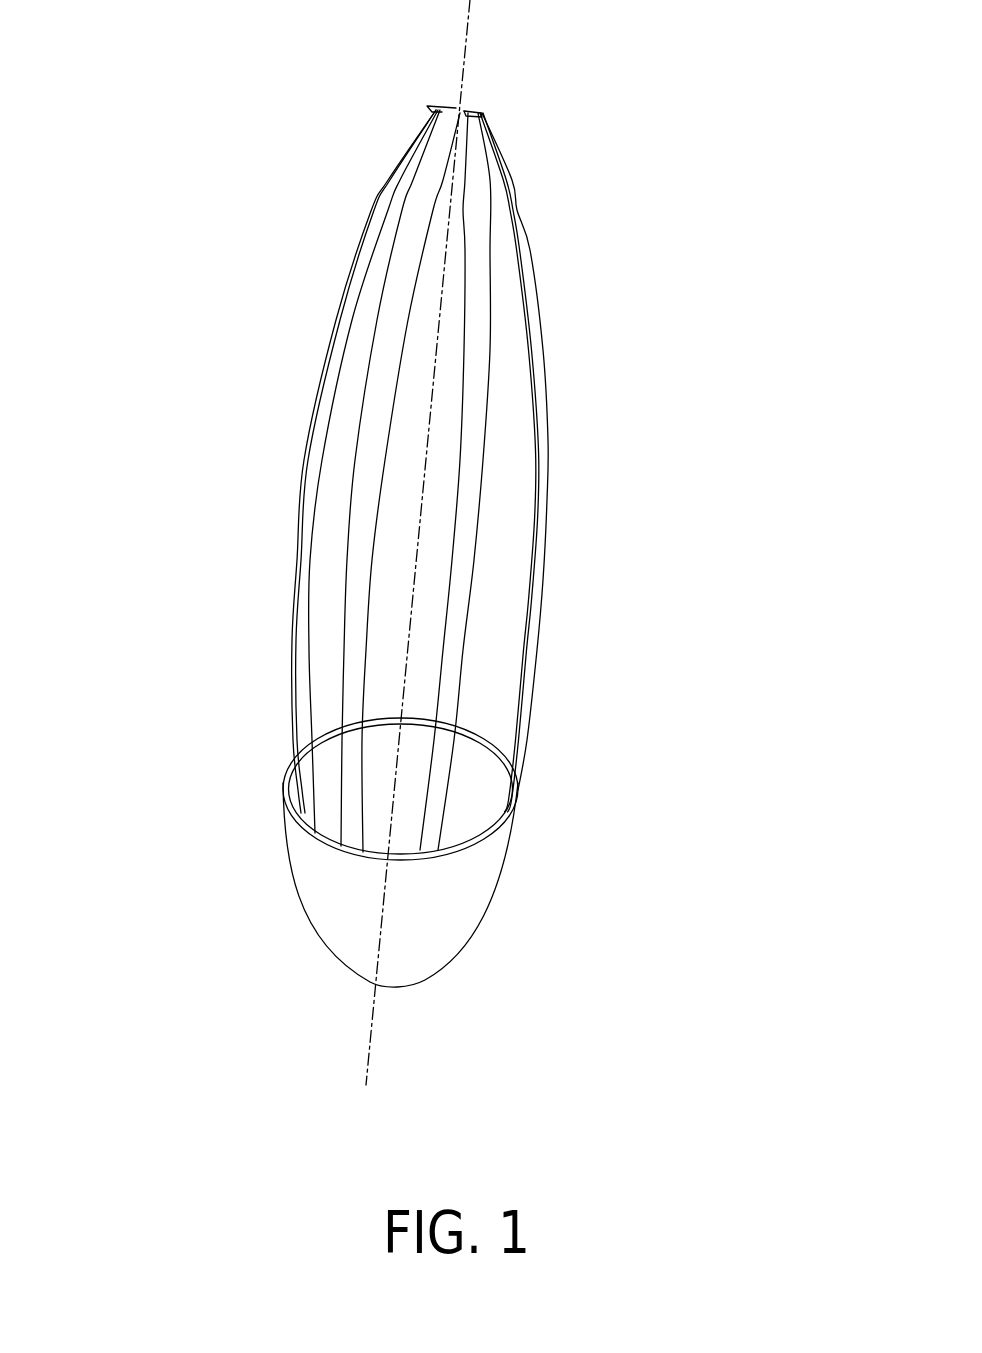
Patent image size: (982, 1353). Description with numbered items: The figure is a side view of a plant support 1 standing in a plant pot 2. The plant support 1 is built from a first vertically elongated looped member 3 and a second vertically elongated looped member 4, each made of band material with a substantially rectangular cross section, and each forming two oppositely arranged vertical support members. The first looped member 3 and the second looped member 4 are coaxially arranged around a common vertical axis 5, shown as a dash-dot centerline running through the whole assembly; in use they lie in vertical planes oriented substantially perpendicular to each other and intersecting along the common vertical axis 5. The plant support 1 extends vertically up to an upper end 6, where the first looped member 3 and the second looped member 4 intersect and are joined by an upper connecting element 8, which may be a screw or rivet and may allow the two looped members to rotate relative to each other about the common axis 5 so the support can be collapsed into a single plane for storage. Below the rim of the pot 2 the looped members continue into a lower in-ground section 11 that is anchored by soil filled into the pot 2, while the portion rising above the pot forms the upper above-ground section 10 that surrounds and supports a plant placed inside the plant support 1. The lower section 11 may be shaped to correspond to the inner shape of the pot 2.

The plant support 1 is at (427, 554).
The pot 2 is at (447, 930).
The first vertically elongated looped member 3 is at (358, 495).
The second vertically elongated looped member 4 is at (453, 659).
The common vertical axis 5 is at (370, 1052).
The upper end 6 is at (476, 112).
The upper connecting element 8 is at (462, 108).
The upper above-ground section 10 is at (282, 568).
The lower in-ground section 11 is at (370, 825).